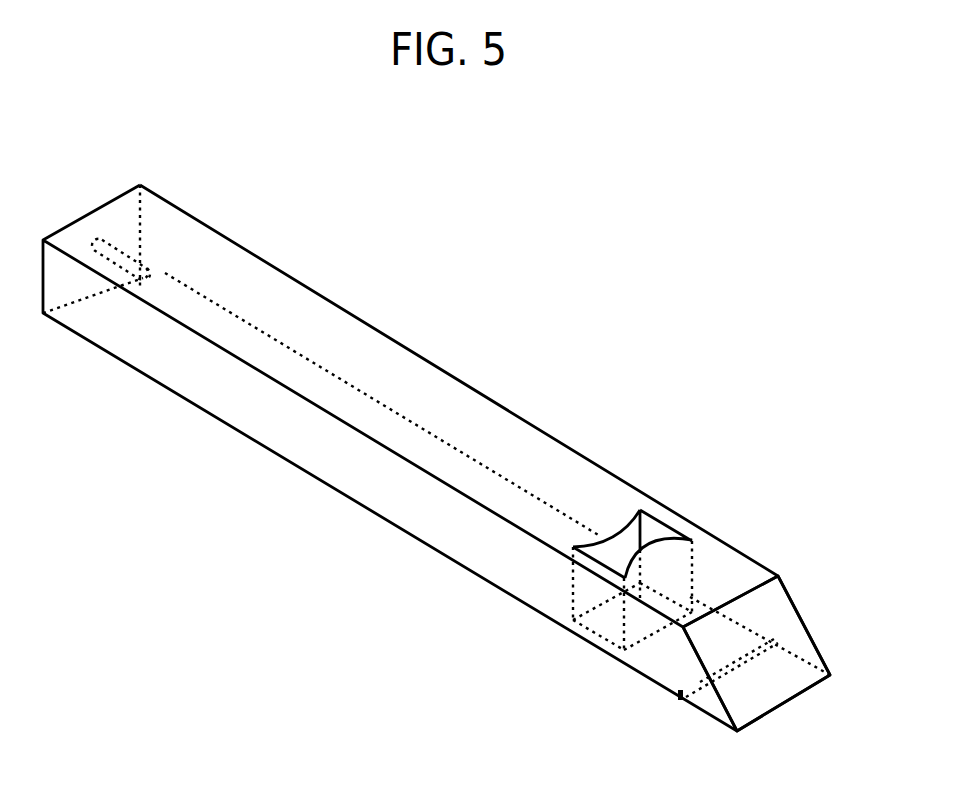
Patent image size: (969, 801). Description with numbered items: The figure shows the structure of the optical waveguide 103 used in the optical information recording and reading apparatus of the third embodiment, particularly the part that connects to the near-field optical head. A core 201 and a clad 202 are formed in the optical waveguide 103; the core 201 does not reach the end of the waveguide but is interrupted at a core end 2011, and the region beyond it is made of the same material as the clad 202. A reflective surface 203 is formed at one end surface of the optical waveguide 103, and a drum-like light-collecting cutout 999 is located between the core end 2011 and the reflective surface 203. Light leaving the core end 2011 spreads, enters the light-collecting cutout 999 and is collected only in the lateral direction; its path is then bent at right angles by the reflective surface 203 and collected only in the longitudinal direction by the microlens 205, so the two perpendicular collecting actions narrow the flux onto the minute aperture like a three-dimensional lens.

The optical waveguide 103 is at (693, 227).
The core 201 is at (125, 258).
The core end 2011 is at (153, 277).
The clad 202 is at (112, 312).
The reflective surface 203 is at (802, 652).
The microlens 205 is at (715, 724).
The light-collecting cutout 999 is at (655, 530).